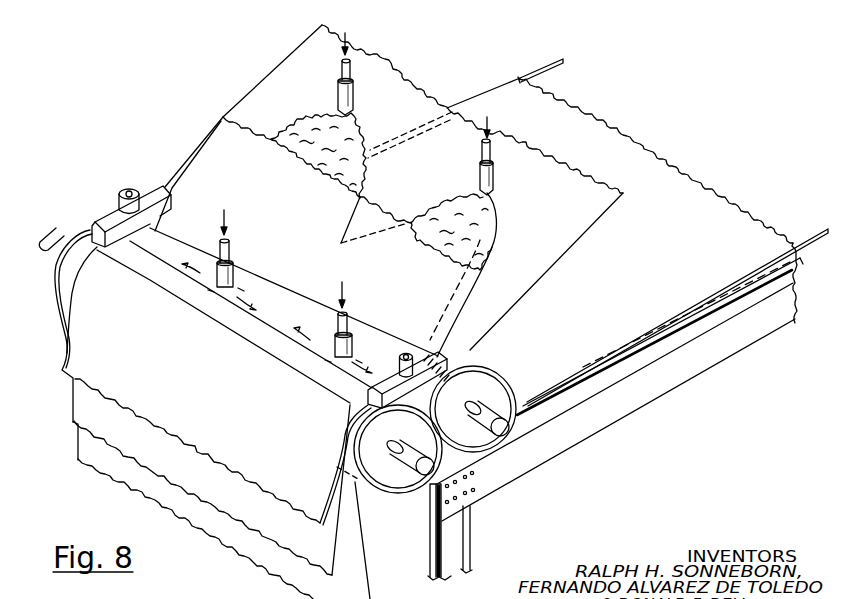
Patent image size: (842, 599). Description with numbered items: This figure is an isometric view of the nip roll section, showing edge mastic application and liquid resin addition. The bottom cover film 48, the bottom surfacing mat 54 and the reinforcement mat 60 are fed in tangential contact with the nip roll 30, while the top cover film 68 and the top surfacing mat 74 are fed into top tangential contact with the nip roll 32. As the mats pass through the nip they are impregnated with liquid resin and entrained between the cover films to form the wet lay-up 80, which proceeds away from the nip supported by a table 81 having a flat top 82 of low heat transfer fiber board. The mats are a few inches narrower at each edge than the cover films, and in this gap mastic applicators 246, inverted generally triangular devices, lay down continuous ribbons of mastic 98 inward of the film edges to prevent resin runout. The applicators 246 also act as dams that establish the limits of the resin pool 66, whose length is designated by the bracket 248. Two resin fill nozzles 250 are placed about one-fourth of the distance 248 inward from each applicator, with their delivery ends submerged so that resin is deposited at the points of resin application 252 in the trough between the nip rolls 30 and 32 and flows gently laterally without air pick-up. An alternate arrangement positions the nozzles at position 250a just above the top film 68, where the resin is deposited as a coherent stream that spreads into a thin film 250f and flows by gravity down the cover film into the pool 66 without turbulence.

The nip roll 30 is at (378, 494).
The nip roll 32 is at (515, 382).
The bottom cover film 48 is at (102, 470).
The bottom surfacing mat 54 is at (97, 438).
The reinforcement mat 60 is at (95, 392).
The resin pool 66 is at (276, 310).
The top cover film 68 is at (398, 72).
The top surfacing mat 74 is at (248, 118).
The wet lay-up 80 is at (645, 148).
The table 81 is at (600, 428).
The flat top 82 is at (665, 357).
The ribbons of mastic 98 is at (556, 60).
The mastic applicators 246 is at (115, 212).
The length of the resin pool 248 is at (220, 330).
The resin fill nozzles 250 is at (310, 283).
The alternate nozzle position 250a is at (338, 97).
The thin film 250f is at (366, 160).
The points of resin application 252 is at (238, 270).